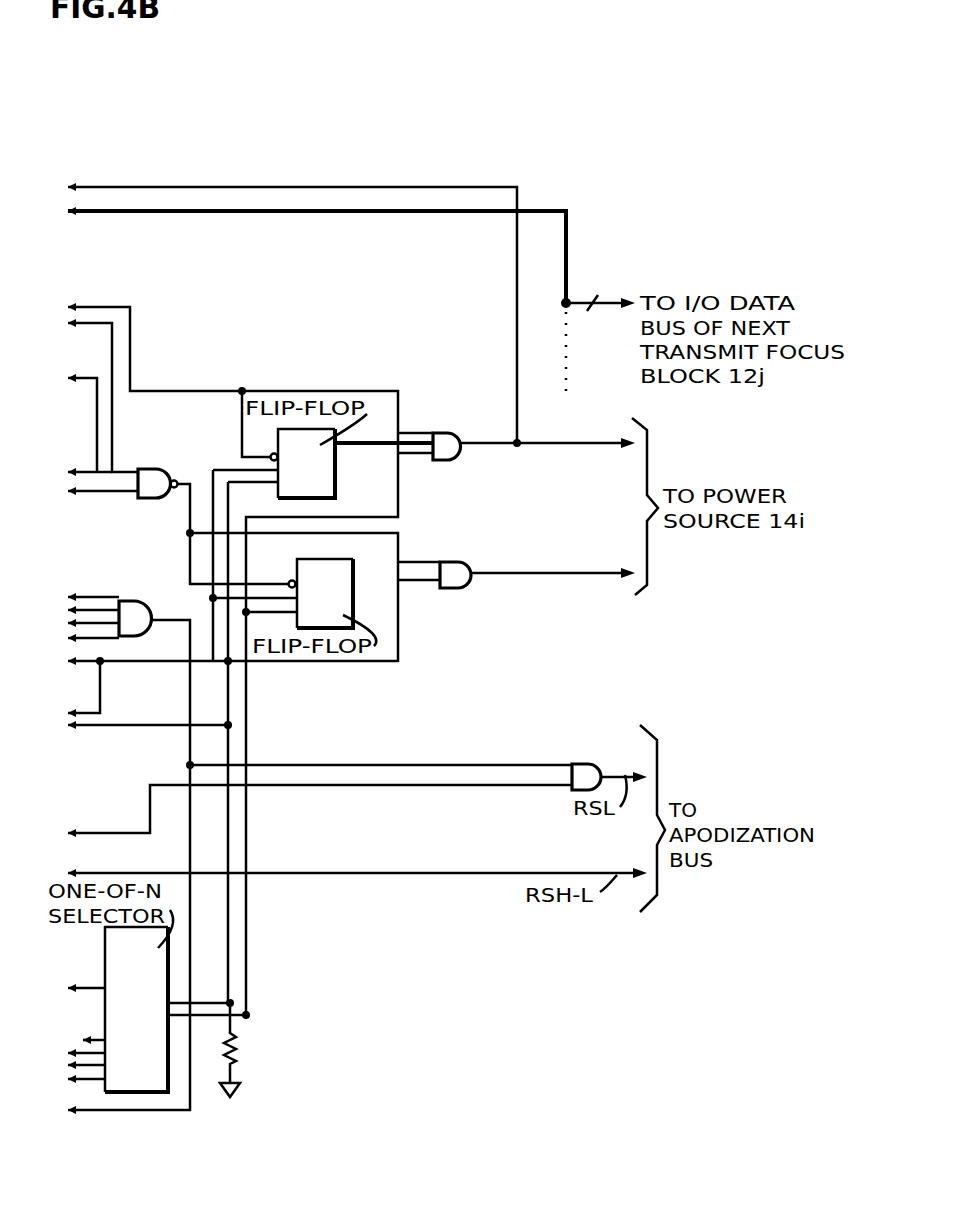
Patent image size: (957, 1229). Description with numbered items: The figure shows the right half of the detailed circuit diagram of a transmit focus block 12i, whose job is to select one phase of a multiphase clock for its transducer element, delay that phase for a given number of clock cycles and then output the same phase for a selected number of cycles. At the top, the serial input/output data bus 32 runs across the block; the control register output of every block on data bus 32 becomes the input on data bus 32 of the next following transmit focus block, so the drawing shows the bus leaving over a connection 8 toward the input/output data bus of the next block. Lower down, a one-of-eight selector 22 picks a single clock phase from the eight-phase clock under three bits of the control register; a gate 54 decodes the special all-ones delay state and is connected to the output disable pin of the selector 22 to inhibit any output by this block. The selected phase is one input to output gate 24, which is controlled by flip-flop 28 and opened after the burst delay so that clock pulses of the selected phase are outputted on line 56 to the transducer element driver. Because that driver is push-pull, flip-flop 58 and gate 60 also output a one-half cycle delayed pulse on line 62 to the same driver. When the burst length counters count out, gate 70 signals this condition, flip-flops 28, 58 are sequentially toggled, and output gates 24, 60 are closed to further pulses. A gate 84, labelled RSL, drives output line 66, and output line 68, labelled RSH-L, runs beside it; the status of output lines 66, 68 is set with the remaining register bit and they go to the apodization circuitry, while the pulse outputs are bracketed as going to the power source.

The transmit focus block 12i is at (562, 163).
The serial input/output data bus 32 is at (536, 205).
The data bus to next block 8 is at (600, 291).
The gate 70 is at (155, 500).
The flip-flop 58 is at (295, 481).
The gate 60 is at (447, 437).
The line 62 is at (572, 422).
The flip-flop 28 is at (310, 567).
The output gate 24 is at (455, 570).
The line 56 is at (558, 570).
The gate 54 is at (130, 604).
The AND gate 84 is at (585, 770).
The output line 66 is at (615, 772).
The output line 68 is at (603, 870).
The one-of-eight selector 22 is at (117, 950).